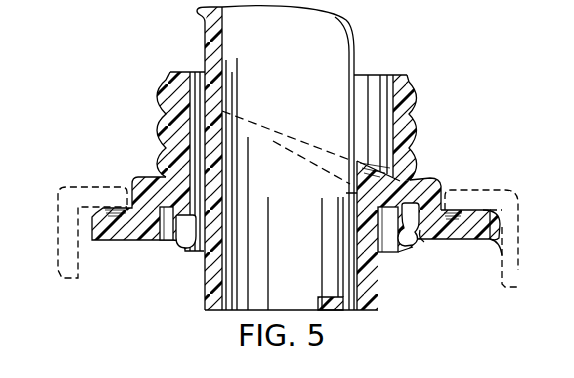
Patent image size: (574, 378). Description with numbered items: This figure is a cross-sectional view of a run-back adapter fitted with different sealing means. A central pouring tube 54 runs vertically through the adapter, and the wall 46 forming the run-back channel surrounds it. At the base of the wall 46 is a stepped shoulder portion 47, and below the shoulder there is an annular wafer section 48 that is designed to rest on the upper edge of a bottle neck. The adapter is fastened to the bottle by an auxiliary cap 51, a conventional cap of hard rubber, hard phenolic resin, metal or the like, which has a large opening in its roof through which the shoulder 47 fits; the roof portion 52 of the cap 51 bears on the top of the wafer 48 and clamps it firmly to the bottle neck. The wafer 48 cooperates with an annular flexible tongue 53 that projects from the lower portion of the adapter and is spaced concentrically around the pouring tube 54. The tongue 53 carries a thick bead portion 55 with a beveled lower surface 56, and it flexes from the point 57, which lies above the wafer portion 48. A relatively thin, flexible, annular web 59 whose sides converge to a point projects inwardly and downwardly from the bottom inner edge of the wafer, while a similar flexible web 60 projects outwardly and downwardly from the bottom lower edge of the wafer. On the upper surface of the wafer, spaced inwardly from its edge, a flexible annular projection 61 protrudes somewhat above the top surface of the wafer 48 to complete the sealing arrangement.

The wall 46 is at (413, 114).
The stepped shoulder portion 47 is at (436, 180).
The annular wafer section 48 is at (483, 225).
The auxiliary cap 51 is at (518, 266).
The roof portion 52 is at (483, 188).
The annular flexible tongue 53 is at (388, 253).
The pouring tube 54 is at (311, 303).
The thick bead portion 55 is at (404, 246).
The beveled lower surface 56 is at (401, 252).
The flexing point 57 is at (382, 213).
The flexible annular web 59 is at (424, 238).
The flexible web 60 is at (502, 255).
The annular projection 61 is at (473, 210).